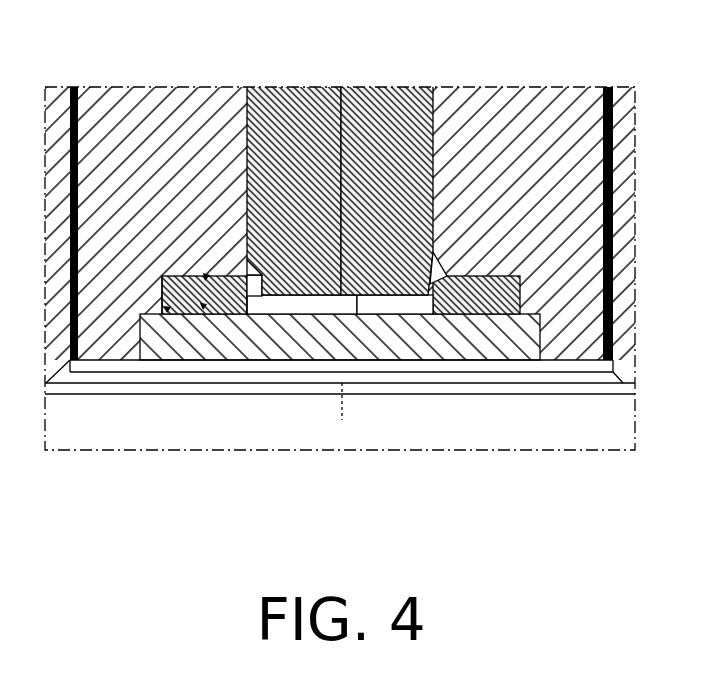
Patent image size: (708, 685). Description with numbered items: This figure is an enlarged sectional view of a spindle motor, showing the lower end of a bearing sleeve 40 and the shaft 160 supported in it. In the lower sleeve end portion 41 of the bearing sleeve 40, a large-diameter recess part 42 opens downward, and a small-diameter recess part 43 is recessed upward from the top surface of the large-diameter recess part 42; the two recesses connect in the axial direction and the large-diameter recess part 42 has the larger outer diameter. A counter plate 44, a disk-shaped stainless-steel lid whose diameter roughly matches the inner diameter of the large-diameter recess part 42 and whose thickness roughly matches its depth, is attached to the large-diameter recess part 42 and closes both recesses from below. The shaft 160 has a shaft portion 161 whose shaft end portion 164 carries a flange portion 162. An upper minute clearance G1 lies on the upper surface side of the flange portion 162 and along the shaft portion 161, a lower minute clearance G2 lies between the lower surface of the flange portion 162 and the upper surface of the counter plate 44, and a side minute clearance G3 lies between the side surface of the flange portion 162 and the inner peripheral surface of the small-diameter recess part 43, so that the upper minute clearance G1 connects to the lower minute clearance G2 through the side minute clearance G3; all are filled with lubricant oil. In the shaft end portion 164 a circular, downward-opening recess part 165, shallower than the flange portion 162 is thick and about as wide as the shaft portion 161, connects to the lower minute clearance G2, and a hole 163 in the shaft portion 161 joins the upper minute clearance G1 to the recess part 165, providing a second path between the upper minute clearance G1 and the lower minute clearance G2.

The bearing sleeve 40 is at (518, 100).
The sleeve end portion 41 is at (570, 325).
The large-diameter recess part 42 is at (536, 303).
The small-diameter recess part 43 is at (517, 283).
The counter plate 44 is at (308, 338).
The shaft 160 is at (298, 100).
The shaft portion 161 is at (388, 100).
The flange portion 162 is at (190, 298).
The hole 163 is at (257, 297).
The shaft end portion 164 is at (363, 256).
The recess part 165 is at (395, 296).
The upper minute clearance G1 is at (207, 277).
The lower minute clearance G2 is at (203, 307).
The side minute clearance G3 is at (165, 292).